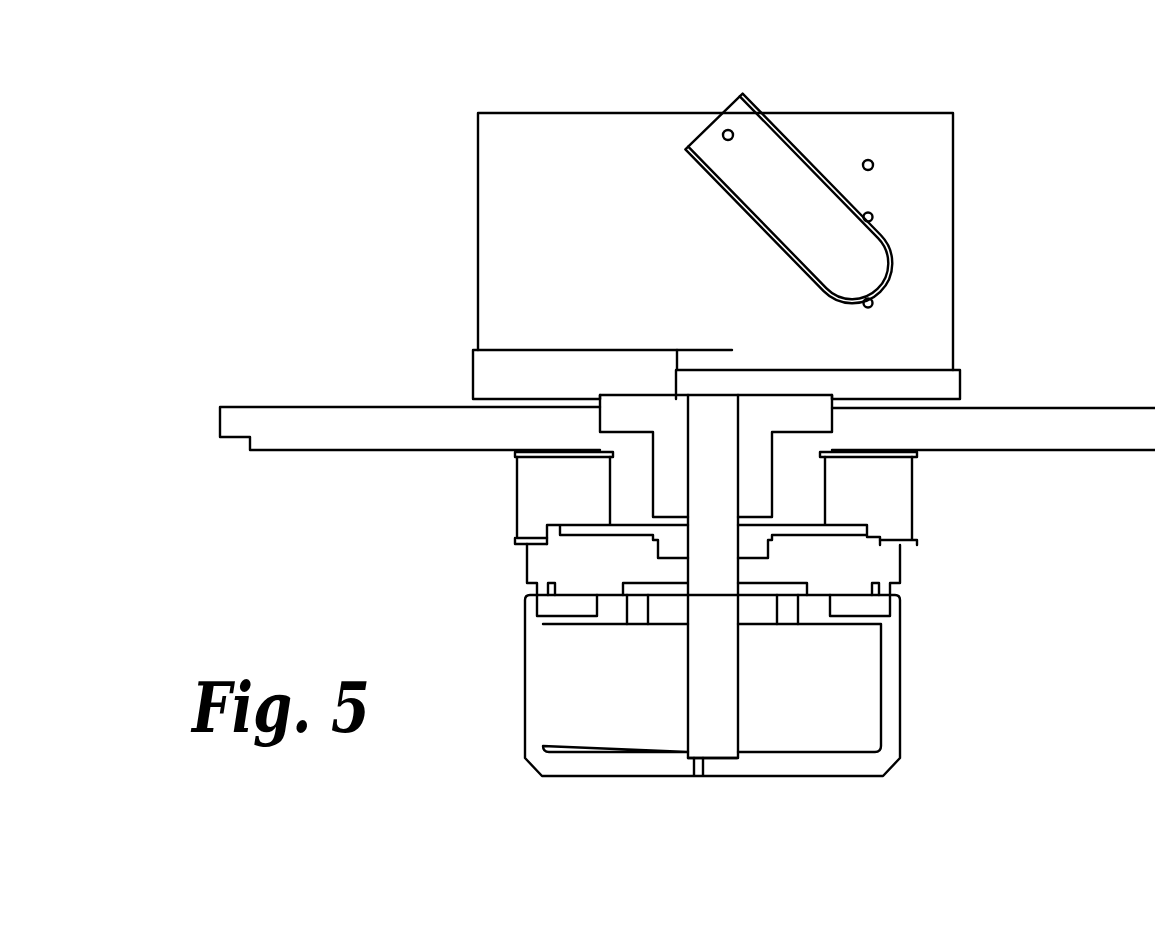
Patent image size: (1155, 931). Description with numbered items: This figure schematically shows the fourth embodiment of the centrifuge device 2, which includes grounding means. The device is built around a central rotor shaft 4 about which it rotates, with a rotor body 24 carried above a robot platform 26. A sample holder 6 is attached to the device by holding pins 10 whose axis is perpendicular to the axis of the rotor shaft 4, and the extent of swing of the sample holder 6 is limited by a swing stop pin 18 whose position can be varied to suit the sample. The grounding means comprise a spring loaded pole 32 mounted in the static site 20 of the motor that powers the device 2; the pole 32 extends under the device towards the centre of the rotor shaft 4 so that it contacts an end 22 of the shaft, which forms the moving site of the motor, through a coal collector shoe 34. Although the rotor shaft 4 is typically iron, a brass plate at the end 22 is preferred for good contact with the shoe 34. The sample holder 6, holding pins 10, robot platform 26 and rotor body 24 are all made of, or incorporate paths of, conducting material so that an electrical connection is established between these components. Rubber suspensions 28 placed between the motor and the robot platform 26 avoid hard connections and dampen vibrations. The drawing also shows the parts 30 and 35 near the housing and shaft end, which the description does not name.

The centrifuge device 2 is at (414, 158).
The rotor shaft 4 is at (725, 585).
The sample holder 6 is at (816, 172).
The holding pins 10 is at (723, 130).
The swing stop pin 18 is at (876, 217).
The static site 20 is at (870, 607).
The end of the shaft 22 is at (712, 760).
The rotor body 24 is at (500, 293).
The robot platform 26 is at (320, 420).
The rubber suspensions 28 is at (532, 505).
The inner cup 30 is at (858, 698).
The spring loaded pole 32 is at (585, 776).
The coal collector shoe 34 is at (708, 768).
The pin 35 is at (697, 762).